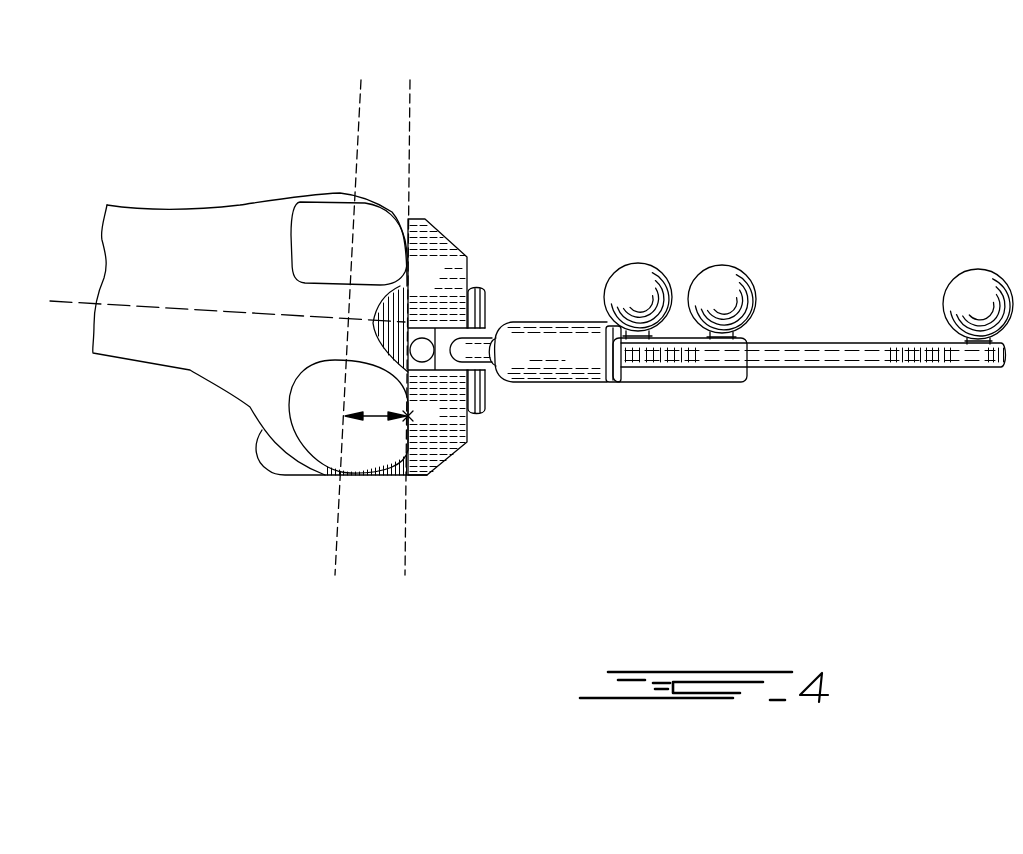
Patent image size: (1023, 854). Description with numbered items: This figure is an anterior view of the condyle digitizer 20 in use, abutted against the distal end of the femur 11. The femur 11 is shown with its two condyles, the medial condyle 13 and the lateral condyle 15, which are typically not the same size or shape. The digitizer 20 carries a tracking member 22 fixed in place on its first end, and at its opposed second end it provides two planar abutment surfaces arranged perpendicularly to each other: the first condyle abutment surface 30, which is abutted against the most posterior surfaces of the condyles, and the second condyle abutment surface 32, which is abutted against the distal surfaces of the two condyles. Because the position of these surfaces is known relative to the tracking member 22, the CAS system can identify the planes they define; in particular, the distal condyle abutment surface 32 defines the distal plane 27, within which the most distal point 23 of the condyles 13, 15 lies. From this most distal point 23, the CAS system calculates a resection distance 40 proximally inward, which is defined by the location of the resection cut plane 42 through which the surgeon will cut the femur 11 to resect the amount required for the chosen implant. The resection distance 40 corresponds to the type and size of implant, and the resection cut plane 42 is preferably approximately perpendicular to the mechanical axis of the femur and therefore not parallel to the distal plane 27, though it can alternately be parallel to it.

The femur bone 11 is at (242, 188).
The lateral condyle 15 is at (370, 240).
The condyle digitizer 20 is at (508, 276).
The tracking member 22 is at (874, 320).
The medial condyle 13 is at (406, 392).
The most distal point 23 is at (408, 417).
The second condyle abutment surface 32 is at (393, 478).
The first condyle abutment surface 30 is at (280, 453).
The resection distance 40 is at (378, 413).
The resection cut plane 42 is at (336, 562).
The distal plane 27 is at (405, 563).